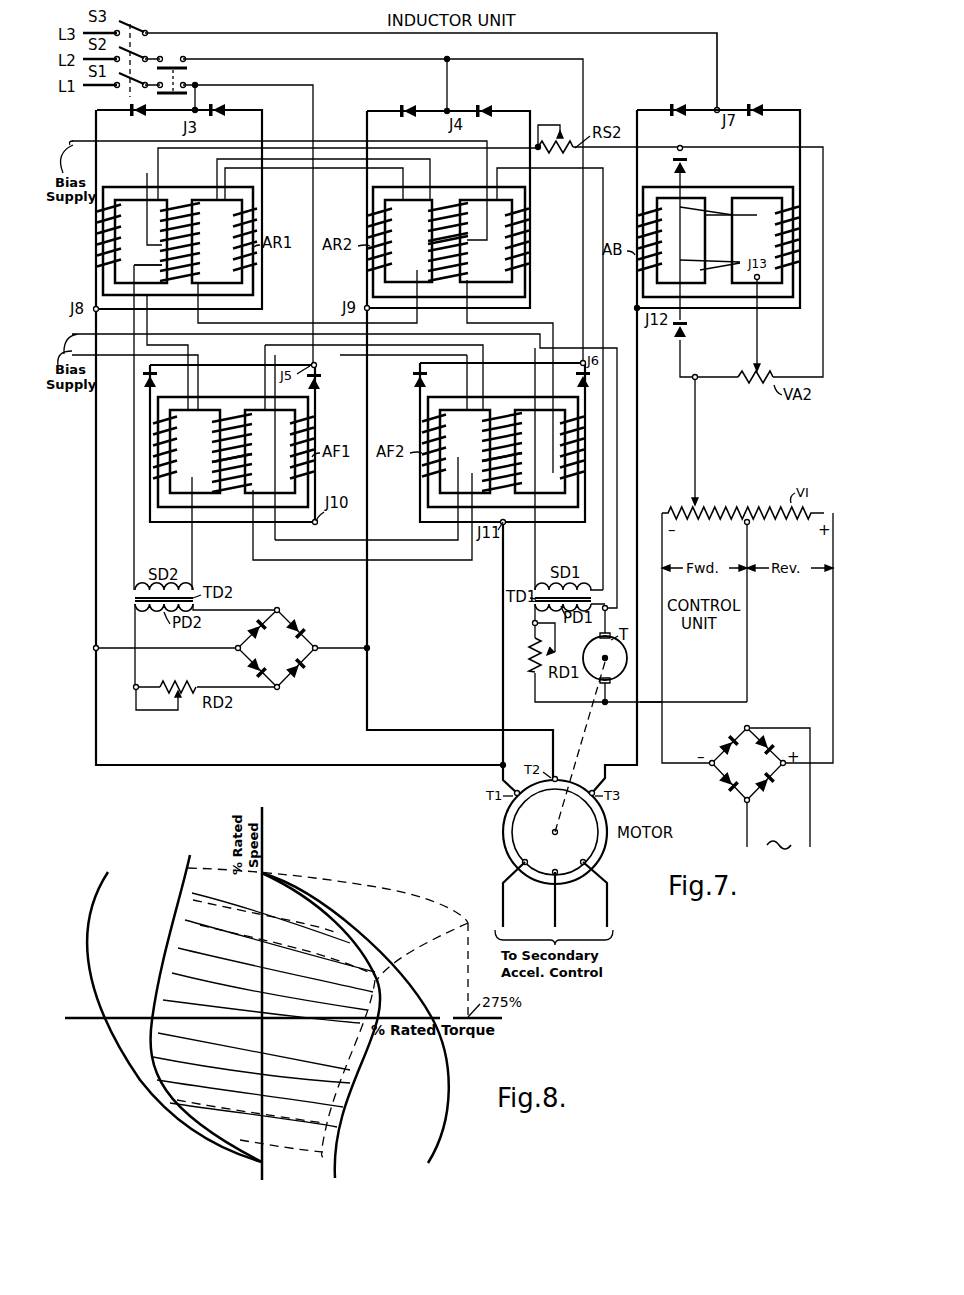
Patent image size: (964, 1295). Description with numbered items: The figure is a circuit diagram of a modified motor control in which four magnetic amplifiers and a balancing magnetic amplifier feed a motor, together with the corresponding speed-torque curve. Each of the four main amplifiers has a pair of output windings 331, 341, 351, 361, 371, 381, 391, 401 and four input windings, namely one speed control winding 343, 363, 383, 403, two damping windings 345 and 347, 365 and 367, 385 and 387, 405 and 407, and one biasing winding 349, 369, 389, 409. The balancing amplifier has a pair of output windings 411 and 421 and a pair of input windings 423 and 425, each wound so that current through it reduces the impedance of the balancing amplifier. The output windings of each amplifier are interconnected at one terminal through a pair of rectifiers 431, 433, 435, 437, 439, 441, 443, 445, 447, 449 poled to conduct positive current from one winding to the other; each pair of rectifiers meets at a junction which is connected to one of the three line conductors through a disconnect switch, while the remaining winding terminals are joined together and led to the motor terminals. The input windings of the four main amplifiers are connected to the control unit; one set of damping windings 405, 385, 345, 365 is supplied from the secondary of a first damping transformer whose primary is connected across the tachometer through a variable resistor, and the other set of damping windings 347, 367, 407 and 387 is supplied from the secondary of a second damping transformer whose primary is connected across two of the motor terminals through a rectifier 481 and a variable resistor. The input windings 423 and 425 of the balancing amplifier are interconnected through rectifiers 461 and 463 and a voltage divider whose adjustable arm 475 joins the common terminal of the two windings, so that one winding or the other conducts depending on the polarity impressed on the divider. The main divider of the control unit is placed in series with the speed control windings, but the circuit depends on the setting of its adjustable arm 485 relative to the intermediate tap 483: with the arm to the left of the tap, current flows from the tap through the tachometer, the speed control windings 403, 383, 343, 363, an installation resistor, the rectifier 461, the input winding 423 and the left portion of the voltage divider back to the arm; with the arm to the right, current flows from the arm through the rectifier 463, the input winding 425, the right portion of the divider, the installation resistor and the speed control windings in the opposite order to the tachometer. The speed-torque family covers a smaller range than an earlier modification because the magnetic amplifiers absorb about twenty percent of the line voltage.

The output winding 331 is at (97, 241).
The output winding 341 is at (256, 218).
The speed control winding 343 is at (182, 205).
The damping winding 345 is at (196, 260).
The damping winding 347 is at (184, 283).
The biasing winding 349 is at (162, 226).
The output winding 351 is at (368, 220).
The output winding 361 is at (530, 235).
The speed control winding 363 is at (452, 205).
The damping winding 365 is at (434, 246).
The damping winding 367 is at (462, 280).
The biasing winding 369 is at (460, 242).
The output winding 371 is at (153, 449).
The output winding 381 is at (312, 431).
The speed control winding 383 is at (230, 413).
The damping winding 385 is at (248, 460).
The damping winding 387 is at (232, 490).
The biasing winding 389 is at (216, 455).
The output winding 391 is at (421, 430).
The output winding 401 is at (585, 467).
The speed control winding 403 is at (505, 414).
The damping winding 405 is at (488, 448).
The damping winding 407 is at (503, 486).
The biasing winding 409 is at (517, 461).
The output winding 411 is at (640, 234).
The output winding 421 is at (778, 223).
The input winding 423 is at (699, 220).
The input winding 425 is at (702, 252).
The rectifier 431 is at (138, 120).
The rectifier 433 is at (225, 120).
The rectifier 435 is at (403, 108).
The rectifier 437 is at (488, 108).
The rectifier 439 is at (143, 382).
The rectifier 441 is at (321, 383).
The rectifier 443 is at (413, 382).
The rectifier 445 is at (590, 383).
The rectifier 447 is at (676, 99).
The rectifier 449 is at (761, 107).
The rectifier 461 is at (688, 171).
The rectifier 463 is at (676, 336).
The adjustable arm 475 is at (758, 367).
The rectifier 481 is at (293, 659).
The intermediate tap 483 is at (748, 525).
The adjustable arm 485 is at (695, 502).